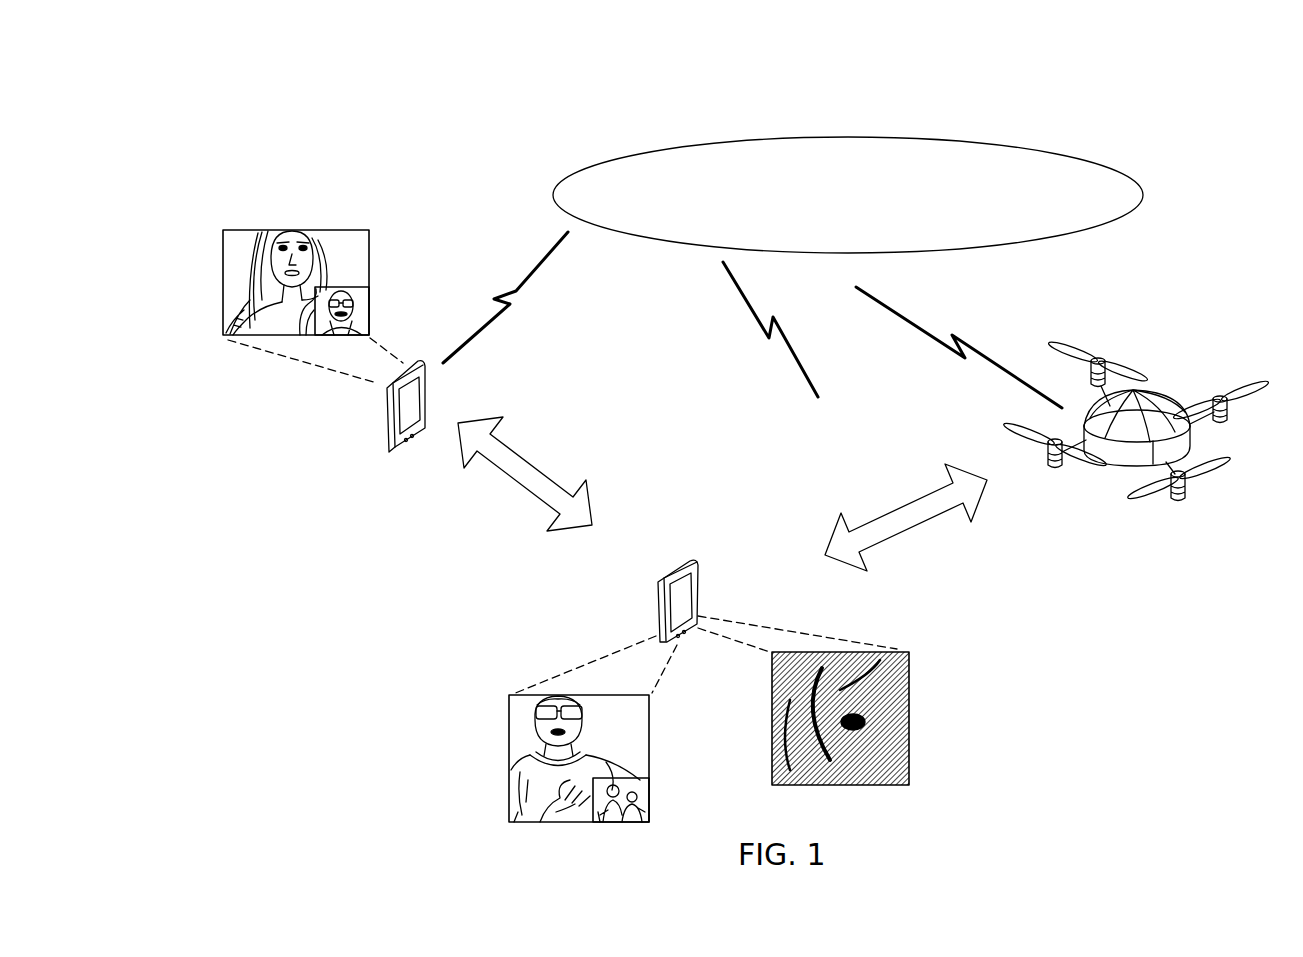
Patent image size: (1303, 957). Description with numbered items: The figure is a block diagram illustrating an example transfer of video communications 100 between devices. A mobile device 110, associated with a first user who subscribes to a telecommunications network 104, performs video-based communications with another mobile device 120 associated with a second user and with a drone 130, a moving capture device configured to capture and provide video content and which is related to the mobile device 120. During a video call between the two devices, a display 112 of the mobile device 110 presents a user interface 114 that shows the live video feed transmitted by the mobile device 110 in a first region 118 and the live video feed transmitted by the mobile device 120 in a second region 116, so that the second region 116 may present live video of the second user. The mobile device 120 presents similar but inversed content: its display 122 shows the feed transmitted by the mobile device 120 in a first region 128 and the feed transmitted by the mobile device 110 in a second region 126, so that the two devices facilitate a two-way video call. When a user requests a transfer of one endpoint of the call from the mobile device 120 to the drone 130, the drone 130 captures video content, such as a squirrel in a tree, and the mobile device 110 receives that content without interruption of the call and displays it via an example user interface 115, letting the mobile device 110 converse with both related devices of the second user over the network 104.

The transfer of video communications 100 is at (210, 113).
The telecommunications network 104 is at (848, 195).
The mobile device 110 is at (630, 594).
The display 112 is at (638, 602).
The user interface 114 is at (535, 759).
The user interface 115 is at (890, 718).
The second region 116 is at (566, 758).
The first region 118 is at (662, 800).
The mobile device 120 is at (359, 427).
The display 122 is at (365, 405).
The second region 126 is at (346, 269).
The first region 128 is at (392, 306).
The drone 130 is at (1136, 402).